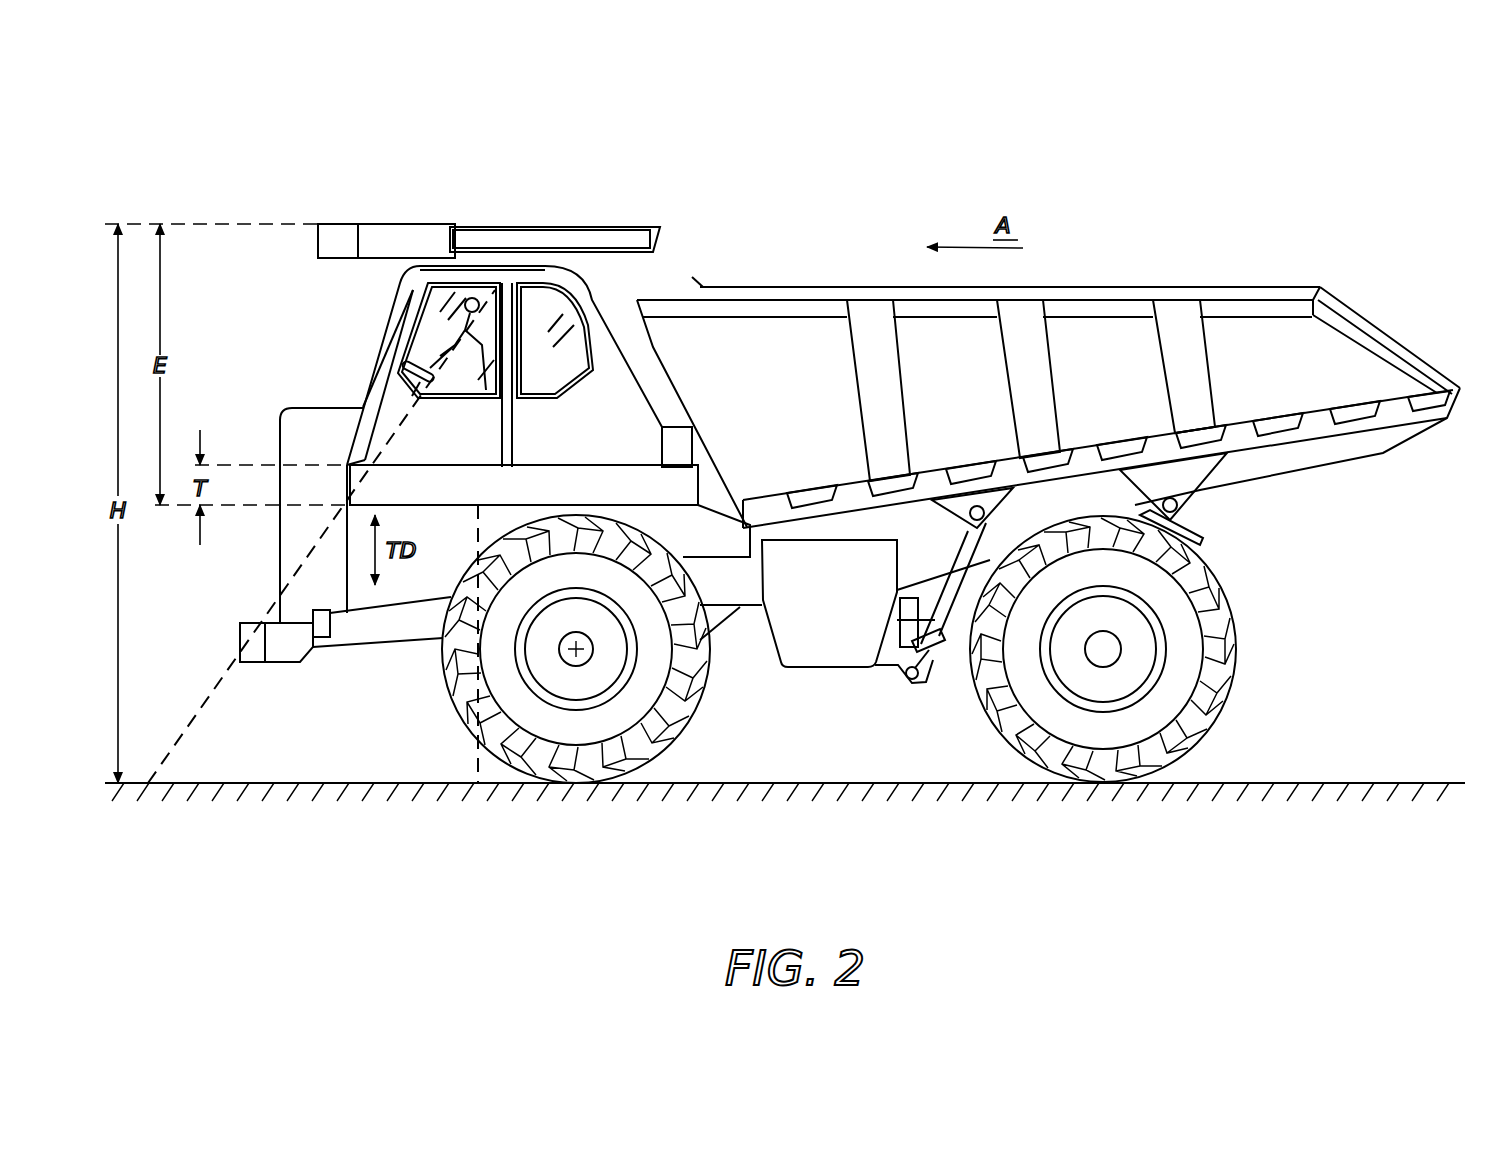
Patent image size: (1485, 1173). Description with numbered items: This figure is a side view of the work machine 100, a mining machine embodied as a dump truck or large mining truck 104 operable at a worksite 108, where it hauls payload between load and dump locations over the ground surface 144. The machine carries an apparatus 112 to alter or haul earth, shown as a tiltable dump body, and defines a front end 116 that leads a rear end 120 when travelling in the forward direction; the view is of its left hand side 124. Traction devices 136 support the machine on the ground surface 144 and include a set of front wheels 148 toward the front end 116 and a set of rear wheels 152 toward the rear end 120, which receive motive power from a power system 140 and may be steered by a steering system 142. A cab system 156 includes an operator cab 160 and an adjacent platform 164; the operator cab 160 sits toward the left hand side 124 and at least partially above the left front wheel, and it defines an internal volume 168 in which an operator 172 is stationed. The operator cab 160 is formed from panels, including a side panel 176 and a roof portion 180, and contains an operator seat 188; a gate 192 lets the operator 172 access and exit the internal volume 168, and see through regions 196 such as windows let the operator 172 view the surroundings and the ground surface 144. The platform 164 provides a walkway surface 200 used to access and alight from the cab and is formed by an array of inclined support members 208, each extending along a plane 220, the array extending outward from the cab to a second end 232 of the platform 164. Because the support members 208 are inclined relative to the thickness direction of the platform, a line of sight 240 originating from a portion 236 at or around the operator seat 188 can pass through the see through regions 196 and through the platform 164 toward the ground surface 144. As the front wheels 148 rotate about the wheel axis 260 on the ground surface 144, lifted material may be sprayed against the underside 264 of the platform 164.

The work machine 100 is at (1365, 125).
The large mining truck 104 is at (238, 152).
The worksite 108 is at (1195, 228).
The apparatus to alter or haul earth 112 is at (1118, 287).
The front end 116 is at (242, 563).
The rear end 120 is at (1370, 511).
The left hand side 124 is at (653, 343).
The traction devices 136 is at (458, 720).
The power system 140 is at (274, 440).
The steering system 142 is at (425, 365).
The ground surface 144 is at (247, 781).
The set of front wheels 148 is at (518, 691).
The set of rear wheels 152 is at (987, 717).
The cab system 156 is at (507, 262).
The operator cab 160 is at (390, 310).
The platform 164 is at (428, 425).
The internal volume 168 is at (693, 278).
The operator 172 is at (476, 300).
The side panel 176 is at (394, 328).
The roof portion 180 is at (505, 262).
The operator seat 188 is at (537, 272).
The gate 192 is at (447, 430).
The see through regions 196 is at (422, 307).
The walkway surface 200 is at (588, 418).
The support members 208 is at (700, 487).
The plane 220 is at (520, 499).
The second end of the platform 232 is at (627, 502).
The portion associated with the operator cab 236 is at (461, 298).
The line of sight 240 is at (172, 720).
The wheel axis 260 is at (575, 653).
The underside of the platform 264 is at (740, 607).